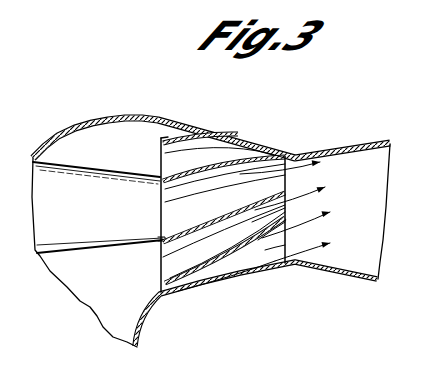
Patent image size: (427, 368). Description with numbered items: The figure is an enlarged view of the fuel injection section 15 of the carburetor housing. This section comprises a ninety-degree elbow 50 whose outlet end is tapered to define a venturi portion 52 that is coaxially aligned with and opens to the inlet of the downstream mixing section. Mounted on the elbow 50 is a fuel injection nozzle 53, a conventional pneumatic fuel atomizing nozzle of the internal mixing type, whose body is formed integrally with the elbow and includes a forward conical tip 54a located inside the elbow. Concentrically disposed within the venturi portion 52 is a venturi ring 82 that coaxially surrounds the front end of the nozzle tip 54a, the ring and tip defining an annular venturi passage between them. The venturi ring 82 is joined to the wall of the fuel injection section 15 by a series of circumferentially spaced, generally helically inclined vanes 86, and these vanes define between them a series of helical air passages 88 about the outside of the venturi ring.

The fuel injection section 15 is at (152, 85).
The elbow 50 is at (163, 140).
The venturi portion 52 is at (217, 291).
The fuel injection nozzle 53 is at (95, 240).
The conical tip 54a is at (78, 167).
The venturi ring 82 is at (240, 260).
The vanes 86 is at (220, 213).
The helical air passages 88 is at (170, 220).